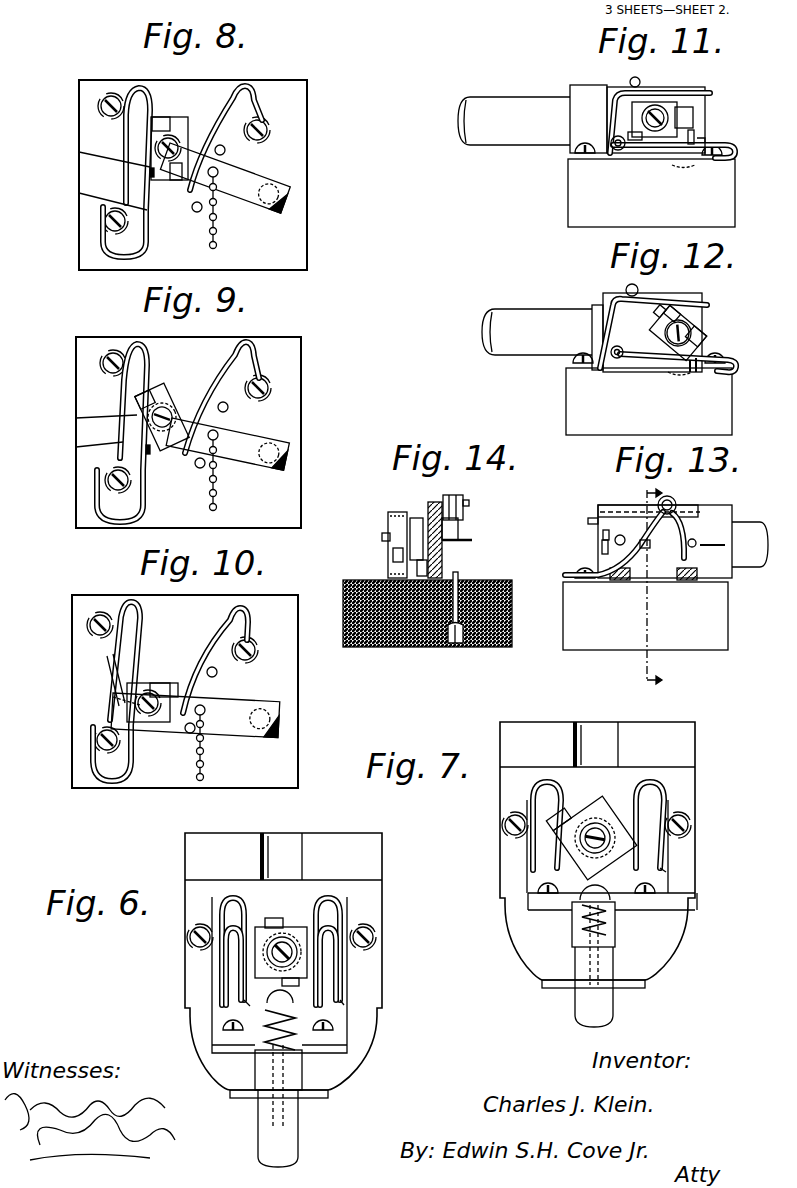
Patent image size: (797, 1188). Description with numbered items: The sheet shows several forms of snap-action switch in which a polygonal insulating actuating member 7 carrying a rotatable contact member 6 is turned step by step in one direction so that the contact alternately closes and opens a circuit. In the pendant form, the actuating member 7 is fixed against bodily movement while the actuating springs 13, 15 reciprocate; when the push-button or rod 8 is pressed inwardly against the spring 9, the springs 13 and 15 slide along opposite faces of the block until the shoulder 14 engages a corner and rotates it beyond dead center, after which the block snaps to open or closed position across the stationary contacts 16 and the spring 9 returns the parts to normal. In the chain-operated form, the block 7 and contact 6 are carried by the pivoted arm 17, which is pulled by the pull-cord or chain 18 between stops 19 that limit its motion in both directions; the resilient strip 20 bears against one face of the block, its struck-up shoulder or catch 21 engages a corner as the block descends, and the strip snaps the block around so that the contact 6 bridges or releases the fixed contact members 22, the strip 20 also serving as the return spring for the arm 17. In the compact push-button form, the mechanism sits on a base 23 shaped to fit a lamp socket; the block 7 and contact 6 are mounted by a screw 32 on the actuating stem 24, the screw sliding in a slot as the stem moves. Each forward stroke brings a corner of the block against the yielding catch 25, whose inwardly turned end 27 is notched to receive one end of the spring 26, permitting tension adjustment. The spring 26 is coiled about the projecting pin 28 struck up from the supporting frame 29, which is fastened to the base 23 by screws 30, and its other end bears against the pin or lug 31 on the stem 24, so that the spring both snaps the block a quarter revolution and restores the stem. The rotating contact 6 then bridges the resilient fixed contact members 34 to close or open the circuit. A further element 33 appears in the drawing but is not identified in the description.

In FIG. 8, the rotatable contact member 6 is at (165, 118).
In FIG. 9, the rotatable contact member 6 is at (162, 394).
In FIG. 10, the rotatable contact member 6 is at (172, 683).
In FIG. 11, the rotatable contact member 6 is at (693, 112).
In FIG. 12, the rotatable contact member 6 is at (700, 346).
In FIG. 14, the rotatable contact member 6 is at (393, 555).
In FIG. 7, the rotatable contact member 6 is at (605, 810).
In FIG. 6, the rotatable contact member 6 is at (272, 918).
In FIG. 8, the actuating member 7 is at (178, 140).
In FIG. 9, the actuating member 7 is at (173, 412).
In FIG. 10, the actuating member 7 is at (158, 722).
In FIG. 11, the actuating member 7 is at (668, 105).
In FIG. 12, the actuating member 7 is at (702, 325).
In FIG. 14, the actuating member 7 is at (415, 520).
In FIG. 7, the actuating member 7 is at (588, 808).
In FIG. 6, the actuating member 7 is at (290, 935).
In FIG. 7, the push-button or rod 8 is at (613, 1002).
In FIG. 6, the push-button or rod 8 is at (298, 1075).
In FIG. 7, the spring 9 is at (615, 925).
In FIG. 6, the spring 9 is at (300, 1024).
In FIG. 7, the actuating spring 13 is at (527, 840).
In FIG. 6, the actuating spring 13 is at (212, 1000).
In FIG. 13, the shoulder 14 is at (669, 589).
In FIG. 7, the shoulder 14 is at (548, 890).
In FIG. 6, the shoulder 14 is at (250, 985).
In FIG. 7, the actuating spring 15 is at (665, 858).
In FIG. 6, the actuating spring 15 is at (340, 995).
In FIG. 7, the stationary contacts 16 is at (527, 800).
In FIG. 6, the stationary contacts 16 is at (222, 963).
In FIG. 8, the pivoted arm 17 is at (225, 178).
In FIG. 9, the pivoted arm 17 is at (227, 444).
In FIG. 10, the pivoted arm 17 is at (195, 715).
In FIG. 8, the pull-cord or chain 18 is at (216, 228).
In FIG. 9, the pull-cord or chain 18 is at (216, 488).
In FIG. 10, the pull-cord or chain 18 is at (205, 757).
In FIG. 8, the stops 19 is at (225, 151).
In FIG. 10, the stops 19 is at (217, 676).
In FIG. 8, the resilient strip 20 is at (79, 193).
In FIG. 9, the resilient strip 20 is at (76, 418).
In FIG. 10, the resilient strip 20 is at (110, 662).
In FIG. 8, the shoulder or catch 21 is at (153, 178).
In FIG. 9, the shoulder or catch 21 is at (149, 455).
In FIG. 10, the shoulder or catch 21 is at (128, 700).
In FIG. 8, the fixed contact members 22 is at (252, 92).
In FIG. 9, the fixed contact members 22 is at (236, 356).
In FIG. 10, the fixed contact members 22 is at (215, 636).
In FIG. 11, the base 23 is at (568, 197).
In FIG. 12, the base 23 is at (649, 401).
In FIG. 14, the base 23 is at (345, 609).
In FIG. 13, the base 23 is at (563, 614).
In FIG. 11, the actuating stem 24 is at (514, 121).
In FIG. 12, the actuating stem 24 is at (537, 332).
In FIG. 14, the actuating stem 24 is at (458, 527).
In FIG. 13, the actuating stem 24 is at (736, 562).
In FIG. 11, the yielding catch 25 is at (621, 150).
In FIG. 12, the yielding catch 25 is at (618, 359).
In FIG. 14, the yielding catch 25 is at (442, 566).
In FIG. 12, the spring 26 is at (626, 292).
In FIG. 14, the spring 26 is at (458, 496).
In FIG. 13, the spring 26 is at (660, 512).
In FIG. 11, the inwardly turned end 27 is at (700, 156).
In FIG. 12, the inwardly turned end 27 is at (690, 368).
In FIG. 13, the inwardly turned end 27 is at (602, 548).
In FIG. 14, the projecting pin 28 is at (470, 503).
In FIG. 13, the projecting pin 28 is at (692, 539).
In FIG. 14, the supporting frame 29 is at (427, 524).
In FIG. 14, the screws 30 is at (456, 645).
In FIG. 14, the pin or lug 31 is at (472, 541).
In FIG. 13, the pin or lug 31 is at (725, 545).
In FIG. 11, the screw 32 is at (655, 140).
In FIG. 12, the screw 32 is at (662, 330).
In FIG. 14, the screw 32 is at (382, 538).
In FIG. 13, the screw 32 is at (650, 546).
In FIG. 11, the contact piece 33 is at (690, 146).
In FIG. 12, the contact piece 33 is at (656, 340).
In FIG. 13, the contact piece 33 is at (605, 532).
In FIG. 11, the resilient fixed contact members 34 is at (620, 93).
In FIG. 12, the resilient fixed contact members 34 is at (707, 303).
In FIG. 14, the resilient fixed contact members 34 is at (388, 519).
In FIG. 13, the resilient fixed contact members 34 is at (565, 573).